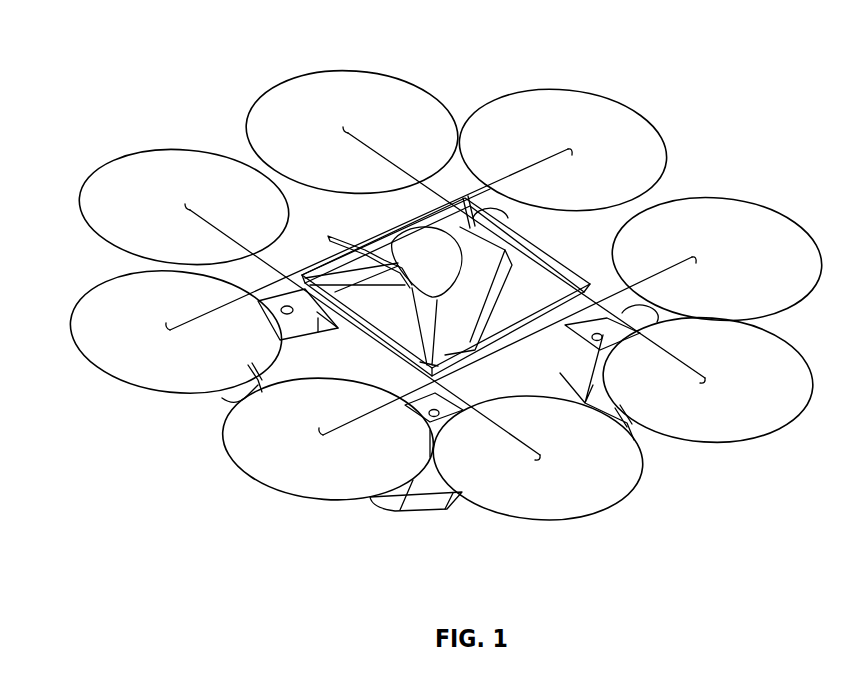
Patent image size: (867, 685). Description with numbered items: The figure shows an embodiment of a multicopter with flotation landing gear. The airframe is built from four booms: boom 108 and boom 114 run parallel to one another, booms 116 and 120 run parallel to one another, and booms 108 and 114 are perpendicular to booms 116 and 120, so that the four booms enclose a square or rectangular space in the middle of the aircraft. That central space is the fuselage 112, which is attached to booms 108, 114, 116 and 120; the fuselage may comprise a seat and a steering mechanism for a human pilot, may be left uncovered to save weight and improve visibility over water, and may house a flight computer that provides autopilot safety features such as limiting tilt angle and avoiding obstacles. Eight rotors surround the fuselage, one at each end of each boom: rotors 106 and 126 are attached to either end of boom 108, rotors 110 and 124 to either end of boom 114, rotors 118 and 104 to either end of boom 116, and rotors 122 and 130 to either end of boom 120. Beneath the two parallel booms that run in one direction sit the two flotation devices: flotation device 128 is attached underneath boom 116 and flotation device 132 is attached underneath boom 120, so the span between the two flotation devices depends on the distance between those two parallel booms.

The rotor 104 is at (100, 371).
The rotor 106 is at (98, 175).
The boom 108 is at (135, 257).
The rotor 110 is at (261, 96).
The fuselage 112 is at (403, 235).
The boom 114 is at (382, 142).
The boom 116 is at (538, 155).
The rotor 118 is at (600, 97).
The boom 120 is at (690, 258).
The rotor 122 is at (765, 206).
The rotor 124 is at (777, 433).
The rotor 126 is at (596, 512).
The flotation device 128 is at (427, 513).
The rotor 130 is at (320, 502).
The flotation device 132 is at (220, 393).